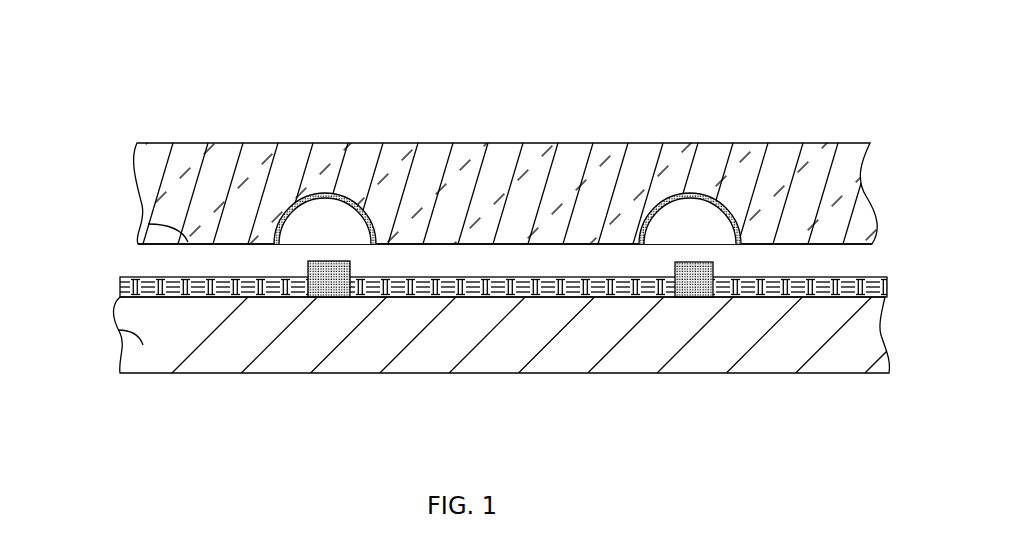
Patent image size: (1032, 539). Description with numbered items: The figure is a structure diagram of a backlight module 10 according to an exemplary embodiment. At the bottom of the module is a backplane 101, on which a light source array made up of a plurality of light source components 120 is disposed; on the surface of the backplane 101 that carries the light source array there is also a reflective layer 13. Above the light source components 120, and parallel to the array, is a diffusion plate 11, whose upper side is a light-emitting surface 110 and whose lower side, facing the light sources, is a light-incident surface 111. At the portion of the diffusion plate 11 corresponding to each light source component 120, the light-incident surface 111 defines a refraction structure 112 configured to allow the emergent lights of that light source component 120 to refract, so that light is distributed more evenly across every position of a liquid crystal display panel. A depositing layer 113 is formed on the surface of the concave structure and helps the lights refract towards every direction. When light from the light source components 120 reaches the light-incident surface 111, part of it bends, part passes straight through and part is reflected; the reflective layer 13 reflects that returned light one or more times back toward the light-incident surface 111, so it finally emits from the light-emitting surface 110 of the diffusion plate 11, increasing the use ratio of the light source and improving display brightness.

The backlight module 10 is at (47, 43).
The diffusion plate 11 is at (870, 170).
The light-emitting surface 110 is at (200, 143).
The light-incident surface 111 is at (190, 240).
The refraction structure 112 is at (323, 191).
The depositing layer 113 is at (353, 195).
The reflective layer 13 is at (838, 277).
The light source component 120 is at (327, 297).
The backplane 101 is at (142, 343).